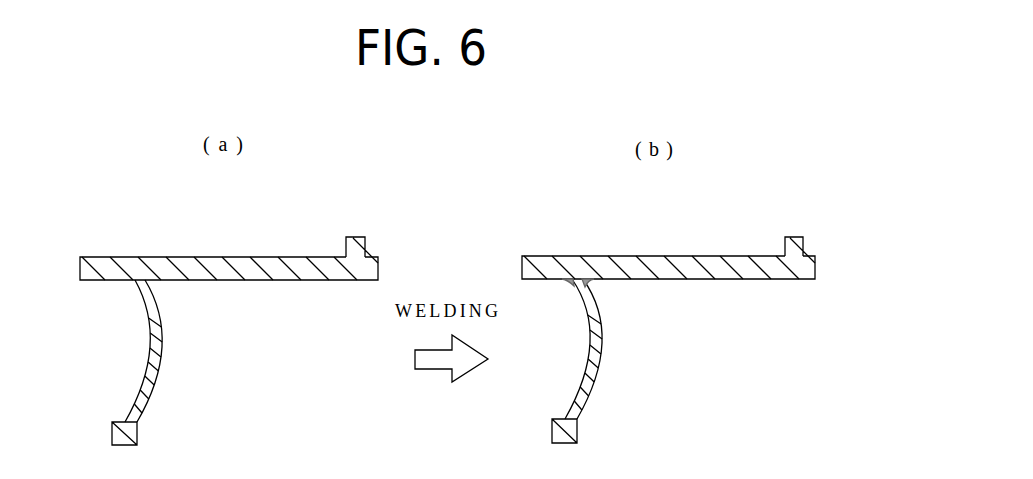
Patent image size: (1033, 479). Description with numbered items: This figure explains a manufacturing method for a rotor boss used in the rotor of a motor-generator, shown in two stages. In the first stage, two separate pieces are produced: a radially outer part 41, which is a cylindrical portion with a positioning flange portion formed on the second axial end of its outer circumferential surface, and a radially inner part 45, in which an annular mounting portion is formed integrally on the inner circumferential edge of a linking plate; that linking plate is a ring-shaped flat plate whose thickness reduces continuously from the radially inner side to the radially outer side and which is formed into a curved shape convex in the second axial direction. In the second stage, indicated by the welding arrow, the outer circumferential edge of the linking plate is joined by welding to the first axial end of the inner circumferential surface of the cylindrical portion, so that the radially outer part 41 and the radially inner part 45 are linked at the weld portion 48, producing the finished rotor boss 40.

The rotor boss 40 is at (663, 315).
The radially outer part 41 is at (229, 228).
The radially inner part 45 is at (134, 365).
The weld portion 48 is at (567, 283).